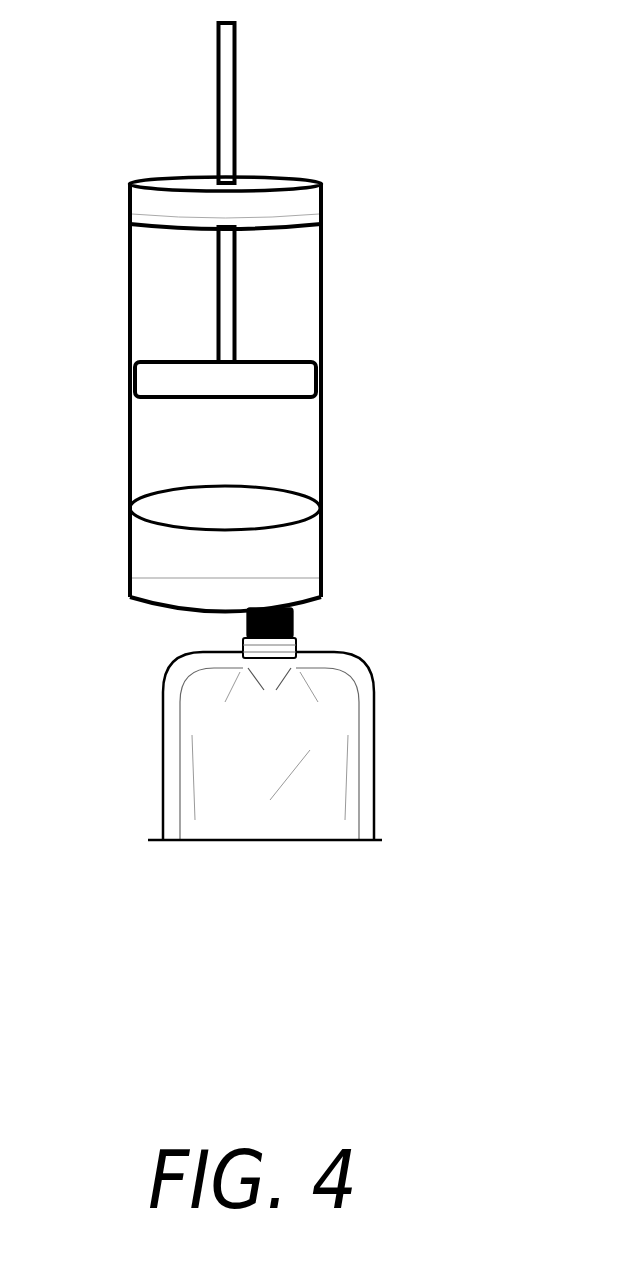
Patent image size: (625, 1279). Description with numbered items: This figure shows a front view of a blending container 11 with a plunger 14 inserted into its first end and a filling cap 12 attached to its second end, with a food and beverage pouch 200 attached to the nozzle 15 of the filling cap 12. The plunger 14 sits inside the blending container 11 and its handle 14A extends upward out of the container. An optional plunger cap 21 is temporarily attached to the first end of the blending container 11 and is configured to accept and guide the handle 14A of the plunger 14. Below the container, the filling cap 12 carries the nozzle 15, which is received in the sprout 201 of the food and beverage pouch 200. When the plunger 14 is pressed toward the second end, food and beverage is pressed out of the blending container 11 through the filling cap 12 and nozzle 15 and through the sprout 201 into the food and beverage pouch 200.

The blending container 11 is at (222, 438).
The filling cap 12 is at (210, 565).
The plunger 14 is at (230, 362).
The handle 14A is at (227, 97).
The plunger cap 21 is at (228, 212).
The nozzle 15 is at (293, 625).
The sprout 201 is at (293, 645).
The food and beverage pouch 200 is at (293, 740).